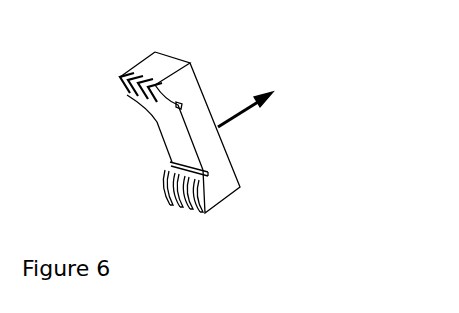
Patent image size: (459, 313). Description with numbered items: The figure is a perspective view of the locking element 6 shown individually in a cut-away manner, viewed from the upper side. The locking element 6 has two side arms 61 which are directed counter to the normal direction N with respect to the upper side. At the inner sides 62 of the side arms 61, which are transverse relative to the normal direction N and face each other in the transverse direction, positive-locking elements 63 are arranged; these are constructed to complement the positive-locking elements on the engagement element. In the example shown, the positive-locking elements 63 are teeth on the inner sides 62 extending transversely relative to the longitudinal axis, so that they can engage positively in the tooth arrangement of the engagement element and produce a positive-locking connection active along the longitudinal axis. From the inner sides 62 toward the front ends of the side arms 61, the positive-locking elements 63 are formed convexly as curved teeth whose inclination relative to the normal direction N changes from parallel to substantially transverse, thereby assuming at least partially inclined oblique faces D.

The locking element 6 is at (184, 119).
The side arms 61 is at (173, 93).
The inner sides 62 is at (181, 105).
The positive-locking elements 63 is at (148, 88).
The normal direction N is at (240, 108).
The oblique faces D is at (178, 107).